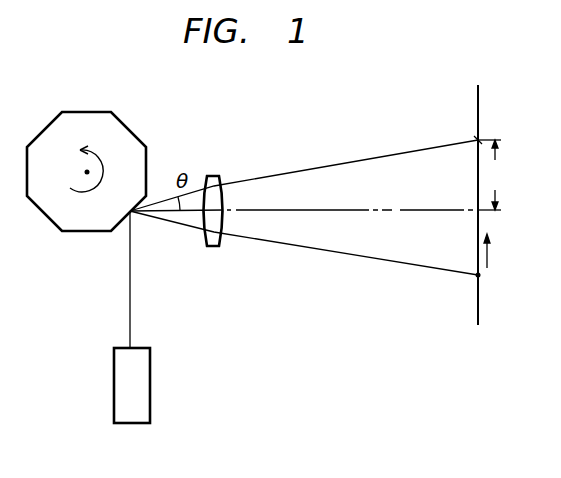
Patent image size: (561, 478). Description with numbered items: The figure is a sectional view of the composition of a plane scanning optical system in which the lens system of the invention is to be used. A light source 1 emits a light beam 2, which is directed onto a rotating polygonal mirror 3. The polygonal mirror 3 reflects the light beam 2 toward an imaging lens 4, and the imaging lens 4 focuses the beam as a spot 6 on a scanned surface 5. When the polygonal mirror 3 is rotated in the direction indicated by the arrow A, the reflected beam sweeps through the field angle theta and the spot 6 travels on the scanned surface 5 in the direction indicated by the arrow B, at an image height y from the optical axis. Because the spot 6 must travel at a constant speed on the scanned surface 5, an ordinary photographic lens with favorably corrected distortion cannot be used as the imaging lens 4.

The light source 1 is at (150, 384).
The light beam 2 is at (131, 290).
The rotating polygonal mirror 3 is at (123, 124).
The imaging lens 4 is at (214, 176).
The scanned surface 5 is at (480, 317).
The spot 6 is at (479, 139).